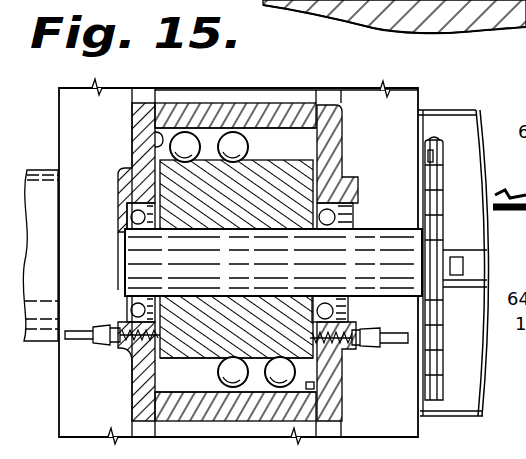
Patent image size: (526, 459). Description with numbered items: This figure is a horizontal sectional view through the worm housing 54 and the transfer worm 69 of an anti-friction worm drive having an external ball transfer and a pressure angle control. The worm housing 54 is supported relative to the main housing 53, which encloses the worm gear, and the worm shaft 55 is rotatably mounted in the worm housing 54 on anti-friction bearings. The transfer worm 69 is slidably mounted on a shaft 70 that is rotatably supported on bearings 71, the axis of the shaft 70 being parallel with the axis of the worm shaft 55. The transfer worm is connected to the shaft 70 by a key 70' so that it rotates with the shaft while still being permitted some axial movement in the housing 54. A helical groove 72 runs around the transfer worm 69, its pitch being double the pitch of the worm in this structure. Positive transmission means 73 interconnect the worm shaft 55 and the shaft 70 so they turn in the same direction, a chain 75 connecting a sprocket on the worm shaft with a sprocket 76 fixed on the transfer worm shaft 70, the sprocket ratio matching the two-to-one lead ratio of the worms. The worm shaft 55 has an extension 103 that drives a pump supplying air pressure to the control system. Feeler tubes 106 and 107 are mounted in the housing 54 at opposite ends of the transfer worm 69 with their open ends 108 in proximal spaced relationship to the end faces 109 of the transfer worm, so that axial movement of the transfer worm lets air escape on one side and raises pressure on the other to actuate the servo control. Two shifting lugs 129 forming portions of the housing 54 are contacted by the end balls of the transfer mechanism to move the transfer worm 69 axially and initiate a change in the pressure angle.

The housing 53 is at (474, 354).
The worm housing 54 is at (133, 143).
The worm shaft 55 is at (33, 178).
The transfer worm 69 is at (262, 104).
The shaft 70 is at (273, 256).
The key 70' is at (236, 259).
The bearings 71 is at (356, 224).
The helical groove 72 is at (268, 165).
The positive transmission means 73 is at (441, 205).
The chain 75 is at (440, 153).
The sprocket 76 is at (437, 140).
The extension 103 is at (475, 264).
The feeler tube 106 is at (385, 342).
The feeler tube 107 is at (115, 345).
The open ends 108 is at (150, 366).
The end faces 109 is at (330, 376).
The shifting lugs 129 is at (158, 136).